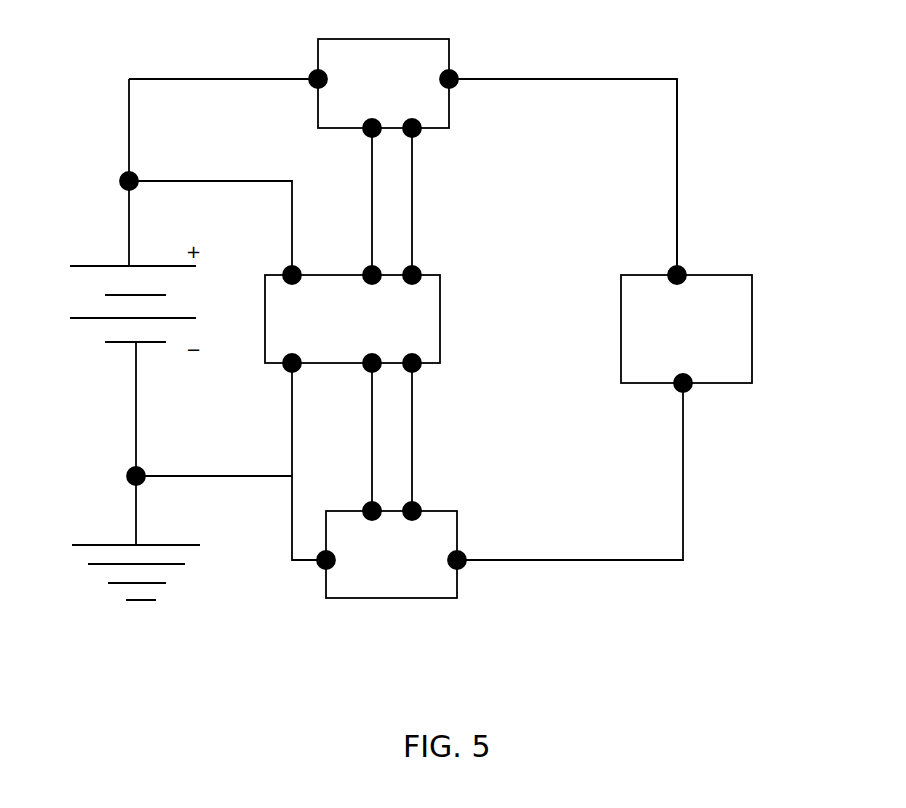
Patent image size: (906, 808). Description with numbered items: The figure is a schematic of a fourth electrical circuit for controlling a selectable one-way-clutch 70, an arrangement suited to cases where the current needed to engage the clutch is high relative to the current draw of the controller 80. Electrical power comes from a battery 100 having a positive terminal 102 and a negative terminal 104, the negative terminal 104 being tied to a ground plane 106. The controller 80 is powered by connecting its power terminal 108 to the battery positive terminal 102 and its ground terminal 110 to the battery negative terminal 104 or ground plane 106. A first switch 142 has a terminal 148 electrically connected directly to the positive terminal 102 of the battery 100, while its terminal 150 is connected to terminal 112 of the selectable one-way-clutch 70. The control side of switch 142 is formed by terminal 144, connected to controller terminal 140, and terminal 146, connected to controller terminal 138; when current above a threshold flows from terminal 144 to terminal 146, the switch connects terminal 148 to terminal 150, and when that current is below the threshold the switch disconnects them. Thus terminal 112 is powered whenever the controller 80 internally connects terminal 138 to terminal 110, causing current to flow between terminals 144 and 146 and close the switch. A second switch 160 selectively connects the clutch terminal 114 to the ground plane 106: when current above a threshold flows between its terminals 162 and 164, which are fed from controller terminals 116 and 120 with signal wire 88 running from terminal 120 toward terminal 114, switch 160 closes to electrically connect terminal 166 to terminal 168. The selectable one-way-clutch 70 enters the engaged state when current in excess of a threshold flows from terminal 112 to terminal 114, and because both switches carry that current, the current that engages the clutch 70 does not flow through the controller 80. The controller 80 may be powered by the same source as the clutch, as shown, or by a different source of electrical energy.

The selectable one-way-clutch 70 is at (752, 303).
The controller 80 is at (440, 330).
The signal wire 88 is at (677, 123).
The battery 100 is at (93, 266).
The positive terminal 102 is at (127, 178).
The negative terminal 104 is at (130, 474).
The ground plane 106 is at (87, 545).
The power terminal 108 is at (290, 270).
The ground terminal 110 is at (290, 368).
The terminal 112 is at (678, 268).
The terminal 114 is at (688, 388).
The terminal 116 is at (370, 368).
The terminal 120 is at (416, 368).
The controller terminal 138 is at (415, 270).
The controller terminal 140 is at (370, 270).
The switch 142 is at (318, 105).
The terminal 144 is at (366, 135).
The terminal 146 is at (418, 134).
The terminal 148 is at (314, 76).
The terminal 150 is at (455, 72).
The second switch 160 is at (457, 530).
The terminal 162 is at (370, 508).
The terminal 164 is at (416, 507).
The terminal 166 is at (462, 565).
The terminal 168 is at (322, 566).